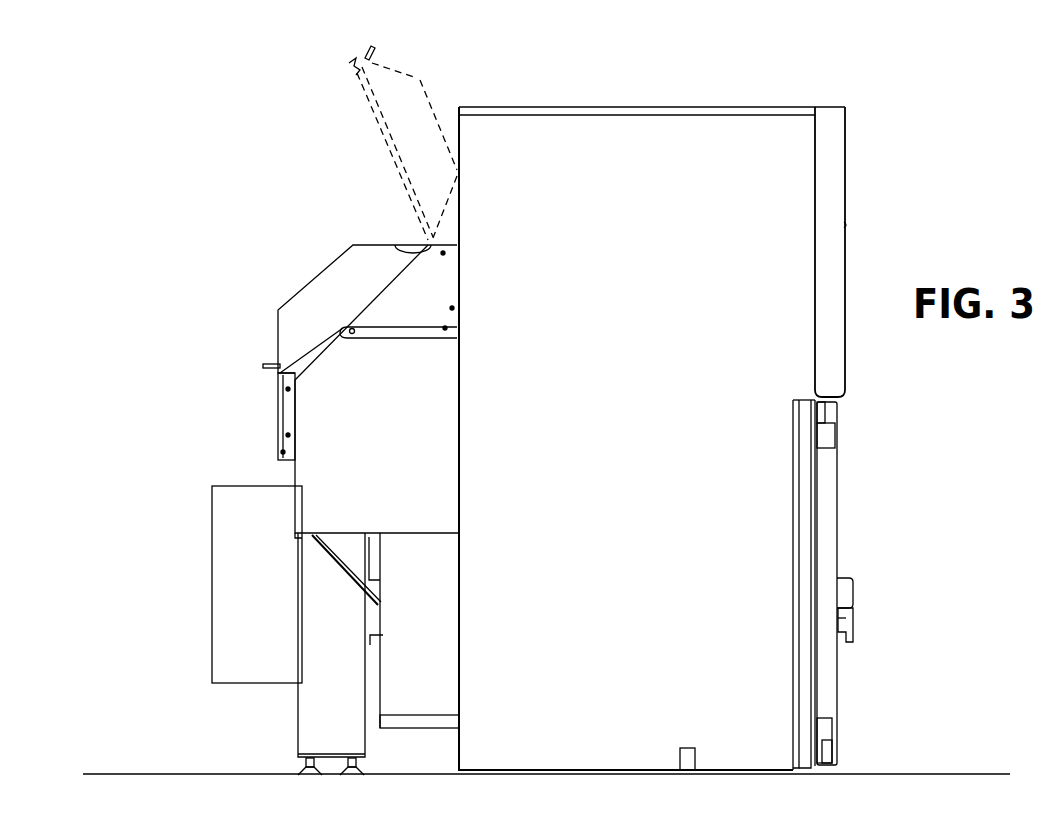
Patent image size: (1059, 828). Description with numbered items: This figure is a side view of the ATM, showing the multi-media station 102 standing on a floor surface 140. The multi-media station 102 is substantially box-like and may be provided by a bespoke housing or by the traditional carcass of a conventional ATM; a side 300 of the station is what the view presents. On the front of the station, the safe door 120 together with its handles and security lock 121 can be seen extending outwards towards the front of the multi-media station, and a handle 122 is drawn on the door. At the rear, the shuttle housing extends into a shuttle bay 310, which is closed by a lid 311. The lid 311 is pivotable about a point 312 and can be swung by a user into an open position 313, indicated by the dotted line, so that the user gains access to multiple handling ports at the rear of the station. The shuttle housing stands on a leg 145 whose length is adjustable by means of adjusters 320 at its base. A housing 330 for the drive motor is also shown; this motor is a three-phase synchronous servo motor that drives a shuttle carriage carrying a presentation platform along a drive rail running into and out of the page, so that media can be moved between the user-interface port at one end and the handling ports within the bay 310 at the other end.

The multi-media station 102 is at (797, 61).
The safe door 120 is at (827, 695).
The security lock 121 is at (852, 632).
The handle 122 is at (847, 590).
The floor surface 140 is at (162, 775).
The leg 145 is at (303, 724).
The side 300 is at (553, 752).
The shuttle bay 310 is at (313, 412).
The lid 311 is at (278, 310).
The point 312 is at (418, 247).
The open position 313 is at (421, 86).
The adjusters 320 is at (290, 777).
The housing 330 is at (222, 615).